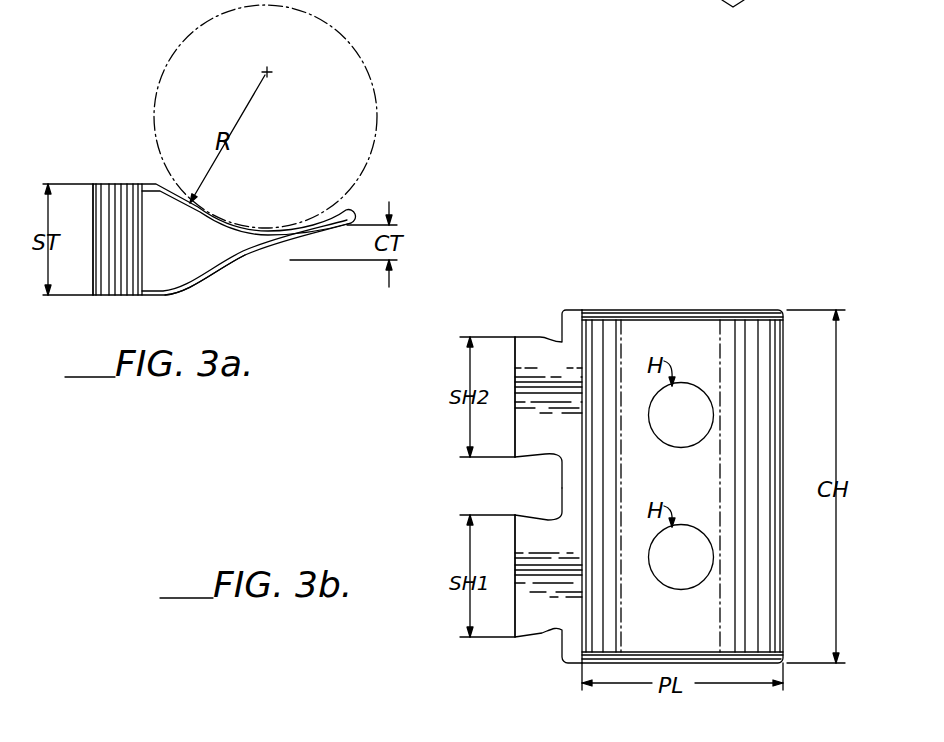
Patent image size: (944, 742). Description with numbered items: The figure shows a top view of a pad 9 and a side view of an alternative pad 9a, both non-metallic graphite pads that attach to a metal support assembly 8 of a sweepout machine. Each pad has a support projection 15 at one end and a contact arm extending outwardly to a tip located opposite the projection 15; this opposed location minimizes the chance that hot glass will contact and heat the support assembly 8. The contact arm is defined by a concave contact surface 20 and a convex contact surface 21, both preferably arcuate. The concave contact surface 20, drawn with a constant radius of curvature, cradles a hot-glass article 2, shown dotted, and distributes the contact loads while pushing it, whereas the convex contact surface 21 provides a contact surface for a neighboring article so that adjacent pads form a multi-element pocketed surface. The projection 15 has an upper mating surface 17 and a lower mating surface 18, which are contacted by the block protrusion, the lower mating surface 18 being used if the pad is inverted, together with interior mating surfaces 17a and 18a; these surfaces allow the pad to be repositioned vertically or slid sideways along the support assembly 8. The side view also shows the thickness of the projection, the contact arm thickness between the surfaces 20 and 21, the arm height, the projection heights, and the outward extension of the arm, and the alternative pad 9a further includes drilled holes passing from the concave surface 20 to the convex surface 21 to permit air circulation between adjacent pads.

In FIG. 3a, the hot-glass article 2 is at (378, 122).
In FIG. 3b, the support assembly 8 is at (772, 5).
In FIG. 3a, the pad 9 is at (258, 267).
In FIG. 3b, the alternative pad 9a is at (742, 311).
In FIG. 3a, the projection 15 is at (92, 196).
In FIG. 3b, the projection 15 is at (513, 453).
In FIG. 3a, the upper mating surface 17 is at (110, 186).
In FIG. 3b, the upper mating surface 17 is at (528, 338).
In FIG. 3b, the interior mating surface 17a is at (540, 457).
In FIG. 3b, the lower mating surface 18 is at (538, 636).
In FIG. 3b, the interior mating surface 18a is at (545, 520).
In FIG. 3a, the concave contact surface 20 is at (347, 209).
In FIG. 3a, the convex contact surface 21 is at (183, 285).
In FIG. 3b, the convex contact surface 21 is at (617, 330).